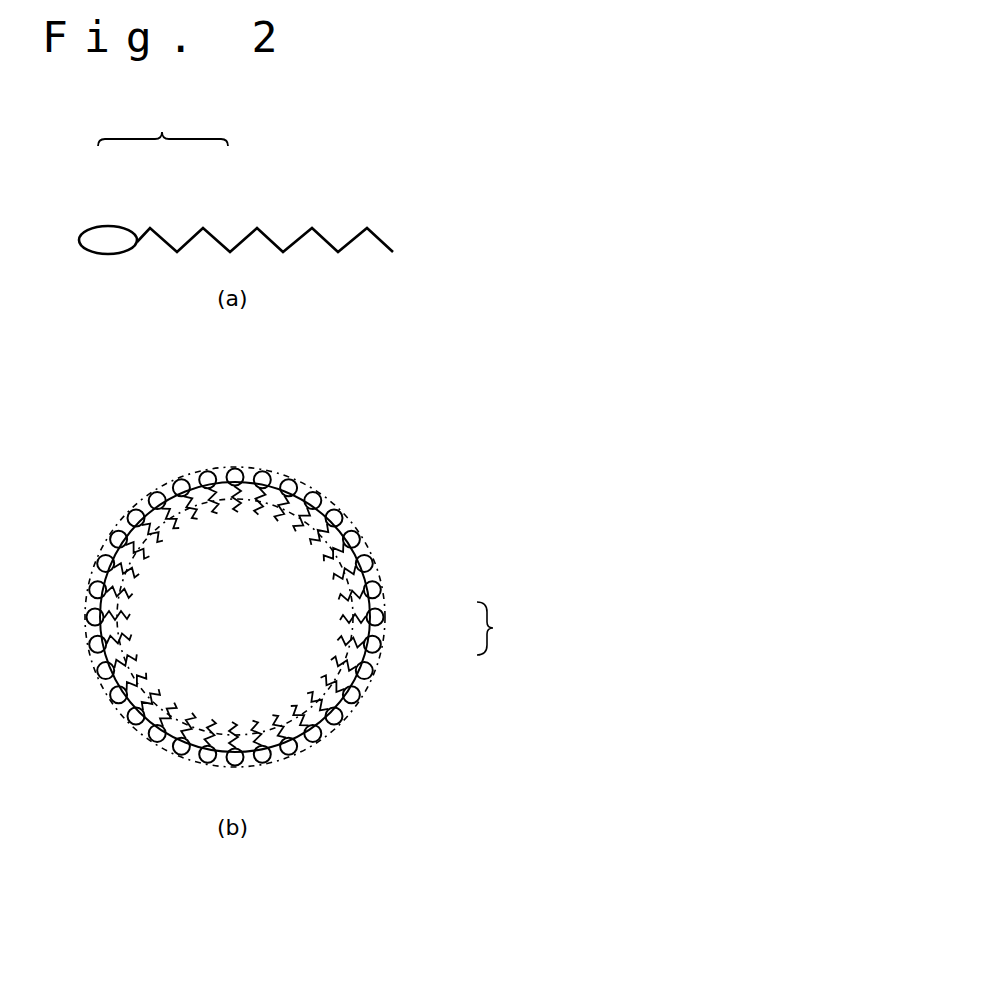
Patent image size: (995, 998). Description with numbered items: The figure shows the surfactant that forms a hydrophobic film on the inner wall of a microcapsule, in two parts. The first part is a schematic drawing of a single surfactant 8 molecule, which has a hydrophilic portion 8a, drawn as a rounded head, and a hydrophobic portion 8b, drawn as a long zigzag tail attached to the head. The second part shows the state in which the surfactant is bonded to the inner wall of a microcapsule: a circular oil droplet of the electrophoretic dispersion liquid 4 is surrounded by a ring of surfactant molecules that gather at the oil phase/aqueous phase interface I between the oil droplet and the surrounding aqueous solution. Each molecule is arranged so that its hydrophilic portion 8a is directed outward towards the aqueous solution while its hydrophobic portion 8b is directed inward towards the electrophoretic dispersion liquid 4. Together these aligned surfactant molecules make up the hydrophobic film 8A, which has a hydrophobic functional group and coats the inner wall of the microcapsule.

The surfactant 8 is at (304, 378).
The hydrophilic portion 8a is at (108, 233).
The hydrophobic portion 8b is at (219, 240).
The electrophoretic dispersion liquid 4 is at (297, 672).
The hydrophobic film 8A is at (257, 750).
The oil phase/aqueous phase interface I is at (327, 508).